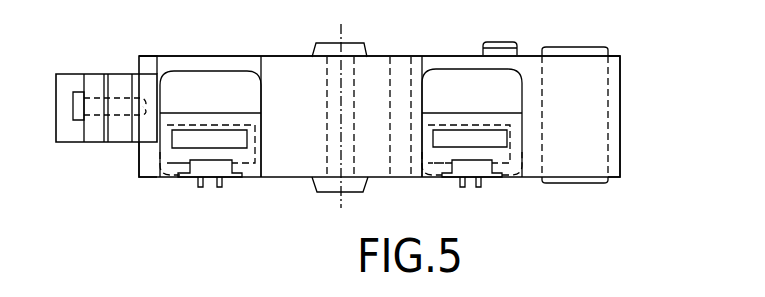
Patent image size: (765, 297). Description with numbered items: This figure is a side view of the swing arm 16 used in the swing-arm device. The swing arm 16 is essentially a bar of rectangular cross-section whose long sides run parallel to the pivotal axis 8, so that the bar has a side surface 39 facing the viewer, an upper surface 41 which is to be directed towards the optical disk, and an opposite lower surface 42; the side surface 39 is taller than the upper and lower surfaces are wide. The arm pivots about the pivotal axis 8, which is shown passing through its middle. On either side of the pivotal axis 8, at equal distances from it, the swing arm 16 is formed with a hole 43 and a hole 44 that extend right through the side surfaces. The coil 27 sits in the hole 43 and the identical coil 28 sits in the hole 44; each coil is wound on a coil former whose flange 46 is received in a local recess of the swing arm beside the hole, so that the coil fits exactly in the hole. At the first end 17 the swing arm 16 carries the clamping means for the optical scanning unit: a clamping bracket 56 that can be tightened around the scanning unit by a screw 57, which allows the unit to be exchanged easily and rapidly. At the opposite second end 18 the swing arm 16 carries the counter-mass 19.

The pivotal axis 8 is at (341, 31).
The swing arm 16 is at (434, 52).
The first end 17 is at (55, 112).
The second end 18 is at (612, 125).
The counter-mass 19 is at (590, 53).
The coil 27 is at (180, 158).
The coil 28 is at (500, 156).
The side surface 39 is at (279, 160).
The upper surface 41 is at (247, 56).
The lower surface 42 is at (297, 178).
The hole 43 is at (195, 97).
The hole 44 is at (490, 92).
The flange 46 is at (215, 121).
The clamping bracket 56 is at (69, 132).
The screw 57 is at (73, 100).